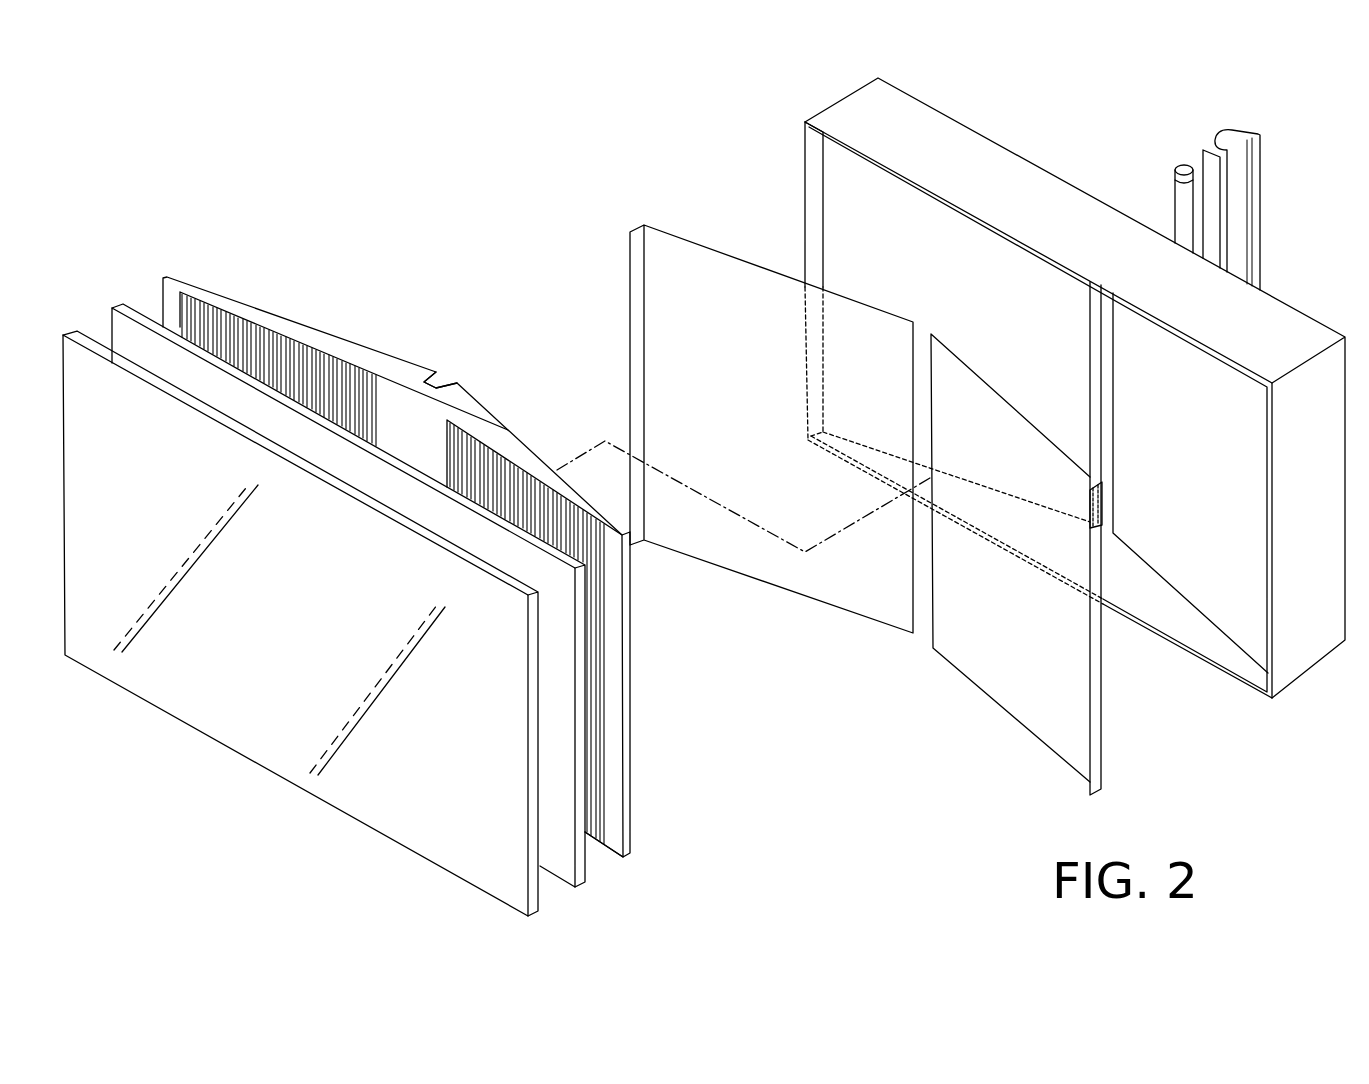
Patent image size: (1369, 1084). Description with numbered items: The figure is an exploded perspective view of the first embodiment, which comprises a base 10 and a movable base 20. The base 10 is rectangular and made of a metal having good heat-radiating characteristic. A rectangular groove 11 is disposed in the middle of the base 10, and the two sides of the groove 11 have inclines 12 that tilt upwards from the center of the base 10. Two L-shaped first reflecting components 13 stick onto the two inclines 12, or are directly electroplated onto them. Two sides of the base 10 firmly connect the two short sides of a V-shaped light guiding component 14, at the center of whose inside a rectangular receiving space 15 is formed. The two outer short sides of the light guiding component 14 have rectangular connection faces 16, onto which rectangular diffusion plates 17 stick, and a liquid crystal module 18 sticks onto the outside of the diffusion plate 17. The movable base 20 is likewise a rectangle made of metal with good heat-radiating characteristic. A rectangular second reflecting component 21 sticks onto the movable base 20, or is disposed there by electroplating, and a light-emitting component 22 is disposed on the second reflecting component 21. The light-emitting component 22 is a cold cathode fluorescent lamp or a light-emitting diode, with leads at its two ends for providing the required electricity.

The base 10 is at (997, 163).
The rectangular groove 11 is at (1105, 357).
The inclines 12 is at (845, 197).
The first reflecting components 13 is at (752, 545).
The V-shaped light guiding component 14 is at (325, 343).
The rectangular receiving space 15 is at (437, 382).
The rectangular connection faces 16 is at (168, 303).
The rectangular diffusion plates 17 is at (141, 343).
The liquid crystal module 18 is at (90, 372).
The movable base 20 is at (1240, 132).
The second reflecting component 21 is at (1208, 187).
The light-emitting component 22 is at (1180, 222).